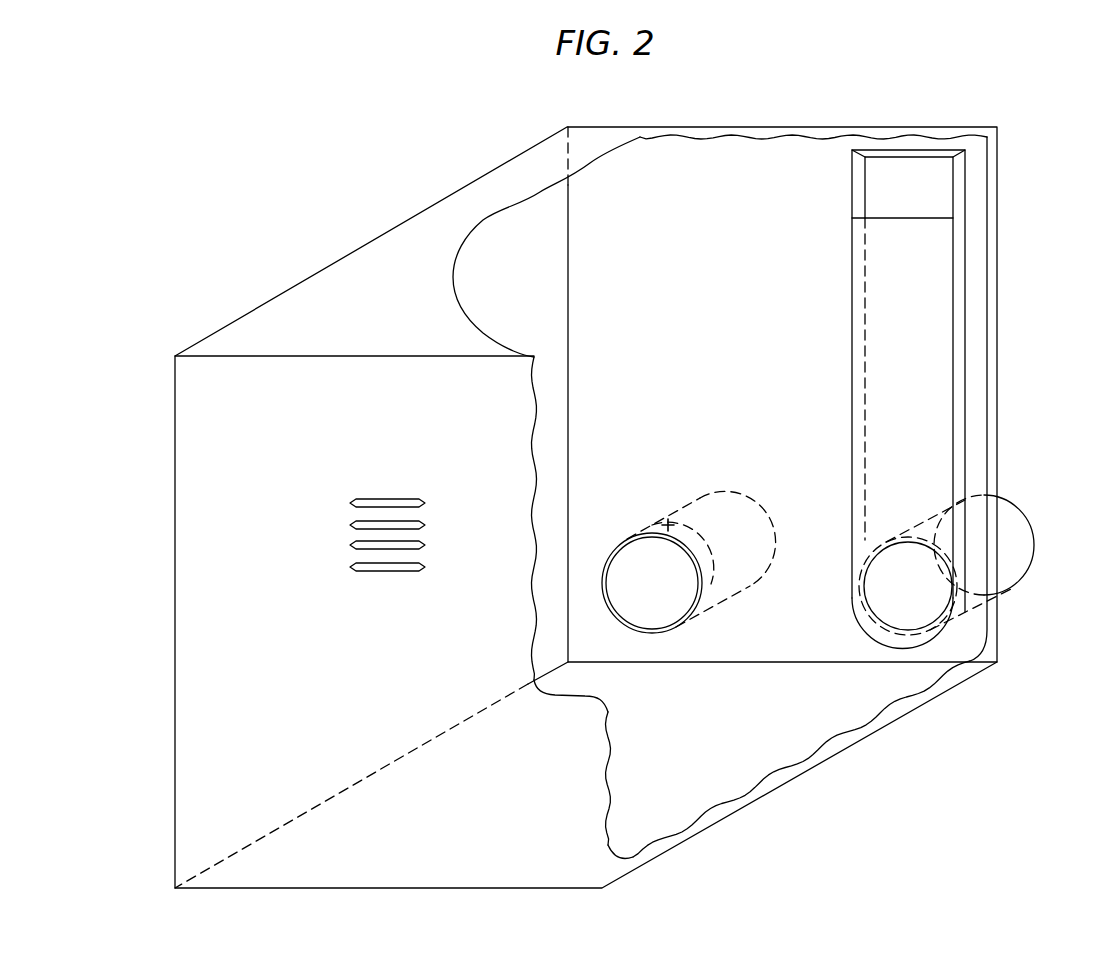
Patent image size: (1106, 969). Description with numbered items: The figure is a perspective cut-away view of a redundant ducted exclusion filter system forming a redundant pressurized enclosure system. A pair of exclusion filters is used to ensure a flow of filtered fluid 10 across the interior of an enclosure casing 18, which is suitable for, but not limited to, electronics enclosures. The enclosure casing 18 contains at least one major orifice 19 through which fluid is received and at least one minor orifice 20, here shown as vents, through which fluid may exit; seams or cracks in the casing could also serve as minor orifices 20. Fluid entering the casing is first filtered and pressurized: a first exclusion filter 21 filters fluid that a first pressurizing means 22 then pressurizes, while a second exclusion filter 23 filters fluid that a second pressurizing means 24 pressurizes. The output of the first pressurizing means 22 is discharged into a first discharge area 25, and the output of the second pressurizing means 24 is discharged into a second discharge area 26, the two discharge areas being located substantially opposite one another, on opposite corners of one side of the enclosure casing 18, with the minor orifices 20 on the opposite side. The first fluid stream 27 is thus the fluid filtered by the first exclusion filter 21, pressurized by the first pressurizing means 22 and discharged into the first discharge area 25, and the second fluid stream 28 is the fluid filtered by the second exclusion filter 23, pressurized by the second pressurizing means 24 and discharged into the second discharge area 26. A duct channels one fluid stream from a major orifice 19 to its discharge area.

The flow of filtered fluid 10 is at (348, 548).
The enclosure casing 18 is at (341, 258).
The major orifice 19 is at (935, 628).
The minor orifice 20 is at (433, 495).
The first exclusion filter 21 is at (1017, 563).
The first pressurizing means 22 is at (938, 530).
The second exclusion filter 23 is at (710, 492).
The second pressurizing means 24 is at (668, 522).
The first discharge area 25 is at (928, 200).
The second discharge area 26 is at (612, 593).
The first fluid stream 27 is at (910, 175).
The second fluid stream 28 is at (650, 584).